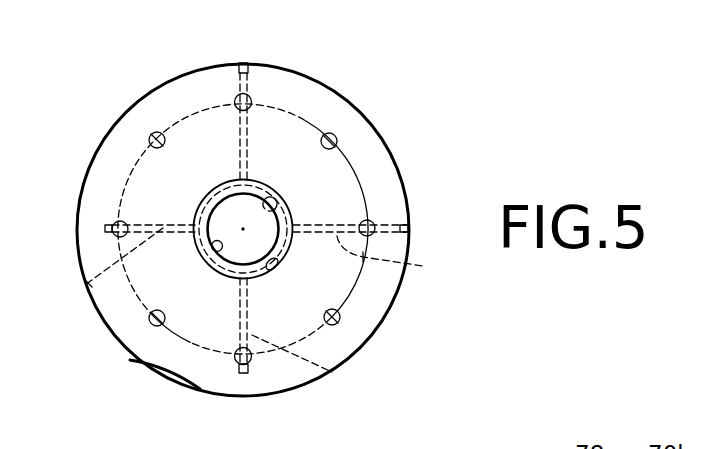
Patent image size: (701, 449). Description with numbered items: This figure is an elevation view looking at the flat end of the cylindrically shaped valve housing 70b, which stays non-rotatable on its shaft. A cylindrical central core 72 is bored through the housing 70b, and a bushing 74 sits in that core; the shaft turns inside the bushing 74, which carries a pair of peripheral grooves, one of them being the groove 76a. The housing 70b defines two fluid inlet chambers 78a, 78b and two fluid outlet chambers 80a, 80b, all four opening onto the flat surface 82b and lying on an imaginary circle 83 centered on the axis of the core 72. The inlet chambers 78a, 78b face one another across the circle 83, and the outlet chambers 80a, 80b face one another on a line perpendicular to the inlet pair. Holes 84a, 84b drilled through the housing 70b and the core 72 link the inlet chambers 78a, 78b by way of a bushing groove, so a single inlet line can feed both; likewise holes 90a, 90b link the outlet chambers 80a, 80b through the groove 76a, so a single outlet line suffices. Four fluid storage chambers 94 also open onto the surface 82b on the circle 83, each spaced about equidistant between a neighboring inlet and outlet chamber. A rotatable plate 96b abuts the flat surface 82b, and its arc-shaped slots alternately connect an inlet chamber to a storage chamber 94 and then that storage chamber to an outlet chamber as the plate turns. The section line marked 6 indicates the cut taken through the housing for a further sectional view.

The section line 6- 6 is at (243, 62).
The valve housing 70b is at (333, 88).
The central core 72 is at (273, 267).
The bushing 74 is at (213, 246).
The groove 76a is at (268, 190).
The fluid inlet chamber 78a is at (251, 99).
The fluid inlet chamber 78b is at (250, 358).
The fluid outlet chamber 80a is at (372, 222).
The fluid outlet chamber 80b is at (111, 231).
The flat surface 82b is at (172, 368).
The circle 83 is at (192, 116).
The hole 84a is at (236, 144).
The hole 84b is at (332, 371).
The hole 90a is at (402, 256).
The hole 90b is at (103, 268).
The fluid storage chamber 94 is at (150, 140).
The rotatable plate 96b is at (472, 437).